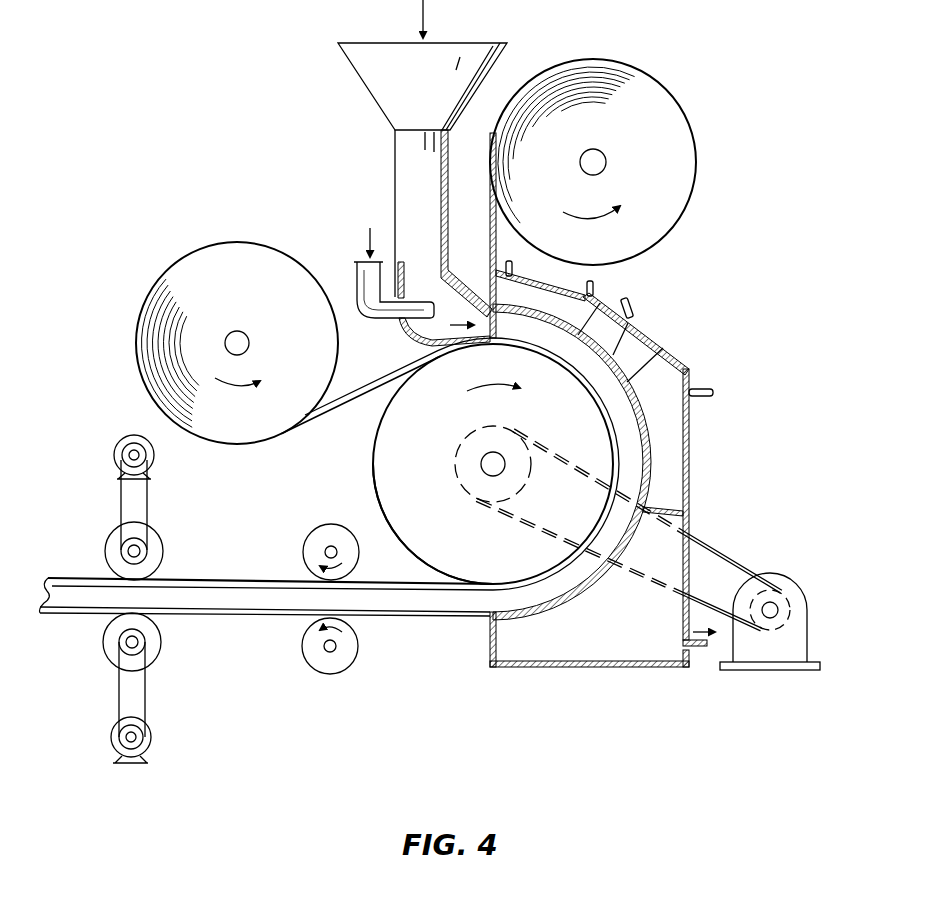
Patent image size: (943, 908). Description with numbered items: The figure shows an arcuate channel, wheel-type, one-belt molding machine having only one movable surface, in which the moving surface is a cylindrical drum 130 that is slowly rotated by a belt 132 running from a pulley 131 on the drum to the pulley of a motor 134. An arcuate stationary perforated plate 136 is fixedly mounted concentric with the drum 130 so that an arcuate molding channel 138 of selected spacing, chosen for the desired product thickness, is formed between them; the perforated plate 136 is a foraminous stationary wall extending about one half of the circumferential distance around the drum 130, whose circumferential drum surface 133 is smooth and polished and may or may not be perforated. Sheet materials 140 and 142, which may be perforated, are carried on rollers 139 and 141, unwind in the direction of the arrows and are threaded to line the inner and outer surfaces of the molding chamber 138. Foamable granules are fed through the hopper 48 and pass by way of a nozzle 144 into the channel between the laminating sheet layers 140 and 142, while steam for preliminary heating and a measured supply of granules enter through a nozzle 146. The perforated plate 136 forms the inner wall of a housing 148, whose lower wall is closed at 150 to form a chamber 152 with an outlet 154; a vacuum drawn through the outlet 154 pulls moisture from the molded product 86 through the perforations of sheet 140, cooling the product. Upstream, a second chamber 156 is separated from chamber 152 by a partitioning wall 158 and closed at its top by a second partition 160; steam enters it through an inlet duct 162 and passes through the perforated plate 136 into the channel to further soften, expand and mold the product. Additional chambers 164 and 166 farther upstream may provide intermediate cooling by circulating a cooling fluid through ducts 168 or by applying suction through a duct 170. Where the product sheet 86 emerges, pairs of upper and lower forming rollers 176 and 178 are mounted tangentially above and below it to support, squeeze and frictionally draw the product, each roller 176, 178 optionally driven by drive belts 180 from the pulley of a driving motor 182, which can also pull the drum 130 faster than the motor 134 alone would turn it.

The hopper 48 is at (432, 84).
The molded product 86 is at (248, 597).
The cylindrical drum 130 is at (510, 415).
The pulley 131 is at (506, 485).
The belt 132 is at (716, 551).
The drum surface 133 is at (400, 540).
The motor 134 is at (808, 606).
The arcuate stationary perforated plate 136 is at (627, 380).
The arcuate molding channel 138 is at (628, 438).
The roller 139 is at (657, 173).
The sheet material 140 is at (497, 233).
The roller 141 is at (289, 315).
The sheet material 142 is at (332, 412).
The nozzle 144 is at (463, 307).
The nozzle 146 is at (395, 318).
The housing 148 is at (689, 471).
The lower wall 150 is at (490, 640).
The chamber 152 is at (624, 632).
The outlet 154 is at (706, 646).
The second chamber 156 is at (676, 402).
The partitioning wall 158 is at (668, 508).
The second partition 160 is at (645, 360).
The inlet duct 162 is at (713, 391).
The additional chamber 164 is at (596, 300).
The additional chamber 166 is at (640, 330).
The duct 168 is at (513, 272).
The duct 170 is at (636, 307).
The upper forming roller 176 is at (322, 552).
The lower forming roller 178 is at (163, 552).
The drive belt 180 is at (148, 503).
The driving motor 182 is at (154, 457).